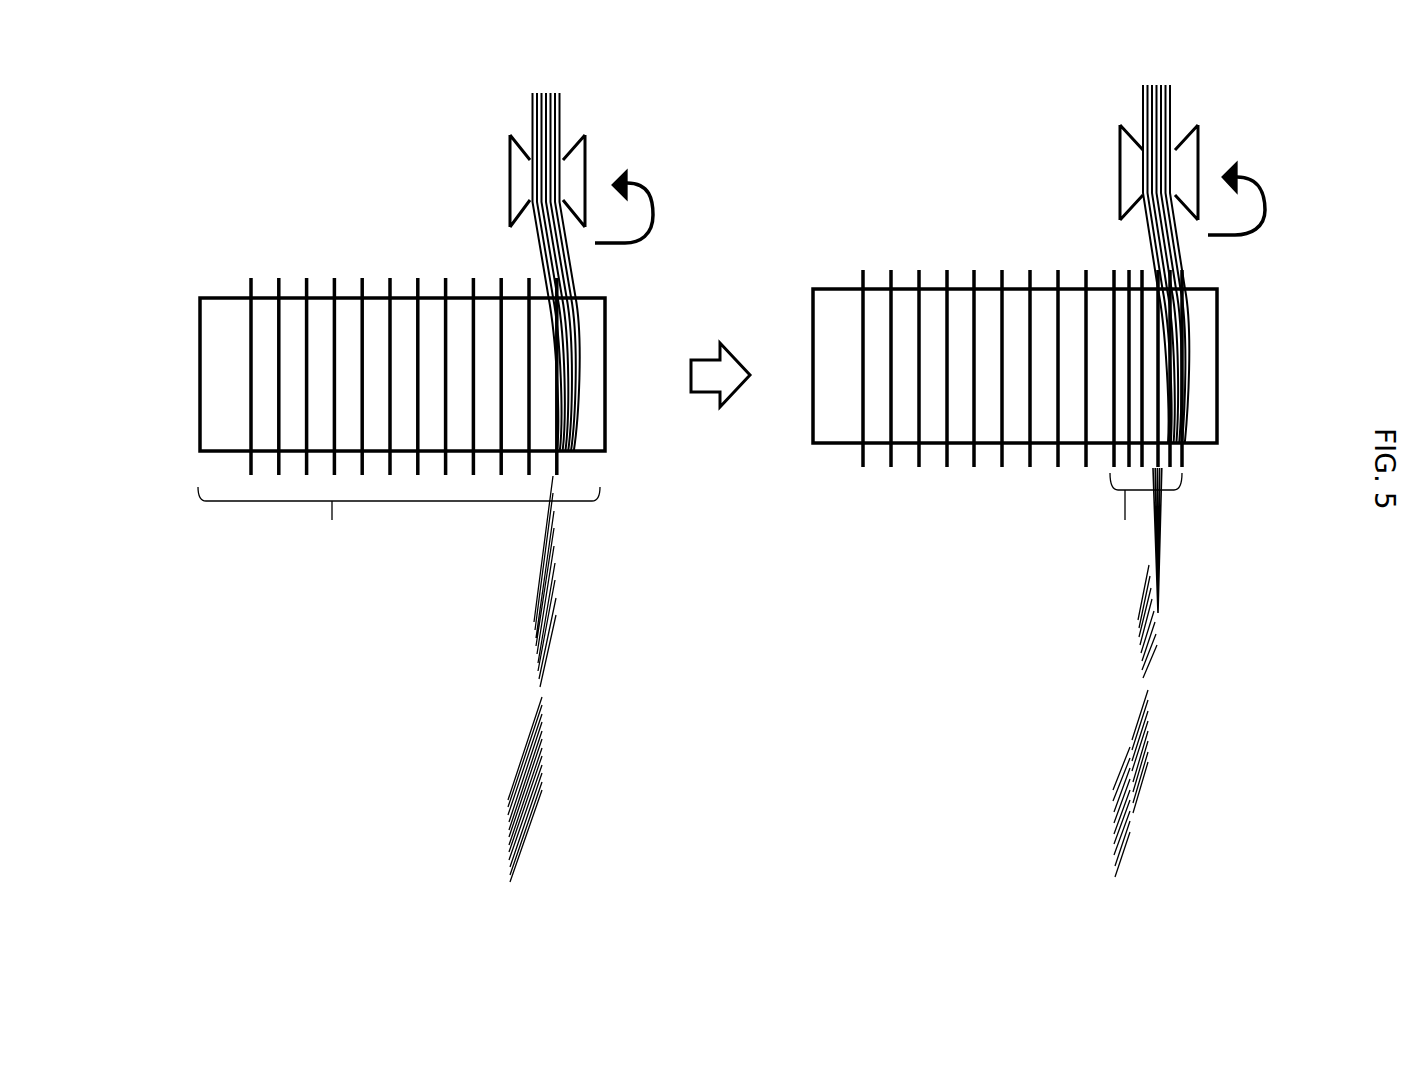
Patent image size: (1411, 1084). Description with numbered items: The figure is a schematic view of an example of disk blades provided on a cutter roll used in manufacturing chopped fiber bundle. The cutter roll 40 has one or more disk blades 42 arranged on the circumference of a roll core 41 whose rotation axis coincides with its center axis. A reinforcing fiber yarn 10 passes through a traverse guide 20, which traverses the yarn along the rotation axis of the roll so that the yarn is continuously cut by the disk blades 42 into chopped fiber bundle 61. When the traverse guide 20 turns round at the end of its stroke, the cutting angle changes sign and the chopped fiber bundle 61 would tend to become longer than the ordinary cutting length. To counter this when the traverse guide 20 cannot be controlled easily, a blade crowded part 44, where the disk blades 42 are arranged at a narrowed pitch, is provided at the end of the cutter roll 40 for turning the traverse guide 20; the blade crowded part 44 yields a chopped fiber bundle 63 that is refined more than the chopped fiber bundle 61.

The reinforcing fiber yarn 10 is at (530, 121).
The traverse guide 20 is at (585, 158).
The cutter roll 40 is at (332, 520).
The roll core 41 is at (198, 387).
The disk blades 42 is at (387, 473).
The blade crowded part 44 is at (1125, 520).
The chopped fiber bundle 61 is at (552, 650).
The chopped fiber bundle 63 is at (1158, 643).